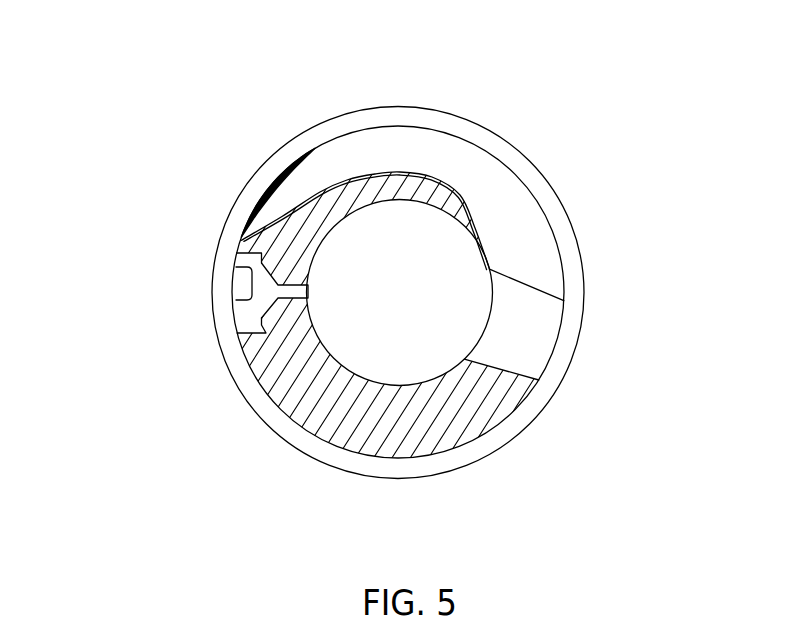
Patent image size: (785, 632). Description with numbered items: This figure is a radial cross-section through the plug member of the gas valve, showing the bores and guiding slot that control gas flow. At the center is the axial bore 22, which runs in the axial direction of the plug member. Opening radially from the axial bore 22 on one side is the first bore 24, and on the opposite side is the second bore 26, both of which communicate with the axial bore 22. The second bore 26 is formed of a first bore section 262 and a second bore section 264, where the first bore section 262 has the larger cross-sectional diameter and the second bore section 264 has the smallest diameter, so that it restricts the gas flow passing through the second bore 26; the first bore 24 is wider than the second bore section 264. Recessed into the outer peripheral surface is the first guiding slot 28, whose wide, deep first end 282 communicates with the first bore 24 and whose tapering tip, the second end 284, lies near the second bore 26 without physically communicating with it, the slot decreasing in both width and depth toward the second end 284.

The axial bore 22 is at (410, 358).
The first bore 24 is at (532, 340).
The second bore 26 is at (160, 334).
The first bore section 262 is at (243, 306).
The second bore section 264 is at (277, 303).
The first guiding slot 28 is at (440, 147).
The first end 282 is at (540, 270).
The second end 284 is at (243, 242).